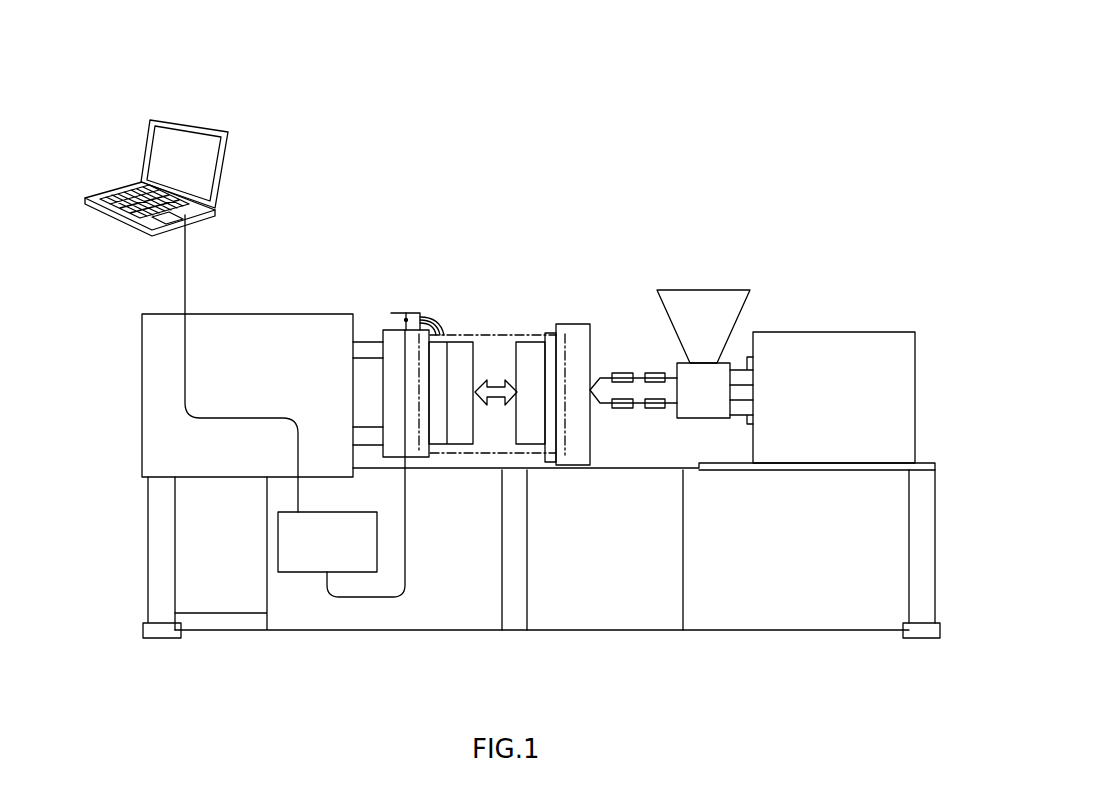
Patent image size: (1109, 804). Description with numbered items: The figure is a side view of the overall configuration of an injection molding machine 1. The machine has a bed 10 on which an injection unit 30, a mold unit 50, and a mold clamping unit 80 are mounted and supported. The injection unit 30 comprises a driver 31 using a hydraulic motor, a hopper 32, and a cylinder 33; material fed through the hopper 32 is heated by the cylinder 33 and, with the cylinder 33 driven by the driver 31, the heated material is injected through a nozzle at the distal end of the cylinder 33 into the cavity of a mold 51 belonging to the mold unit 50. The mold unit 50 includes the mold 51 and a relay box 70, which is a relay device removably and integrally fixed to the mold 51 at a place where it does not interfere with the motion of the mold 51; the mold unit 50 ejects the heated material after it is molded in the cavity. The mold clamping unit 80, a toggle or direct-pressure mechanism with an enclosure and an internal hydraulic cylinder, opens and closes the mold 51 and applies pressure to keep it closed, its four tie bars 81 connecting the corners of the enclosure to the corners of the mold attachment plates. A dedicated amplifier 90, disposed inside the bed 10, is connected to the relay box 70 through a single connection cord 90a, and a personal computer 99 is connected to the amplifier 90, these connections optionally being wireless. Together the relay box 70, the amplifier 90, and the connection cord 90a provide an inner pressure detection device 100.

The injection molding machine 1 is at (546, 32).
The bed 10 is at (948, 505).
The injection unit 30 is at (752, 330).
The driver 31 is at (867, 370).
The hopper 32 is at (711, 302).
The cylinder 33 is at (637, 390).
The mold unit 50 is at (497, 218).
The mold 51 is at (498, 311).
The relay box 70 is at (395, 313).
The mold clamping unit 80 is at (123, 307).
The tie bars 81 is at (368, 437).
The amplifier 90 is at (301, 573).
The connection cord 90a is at (408, 572).
The personal computer 99 is at (225, 158).
The inner pressure detection device 100 is at (371, 613).